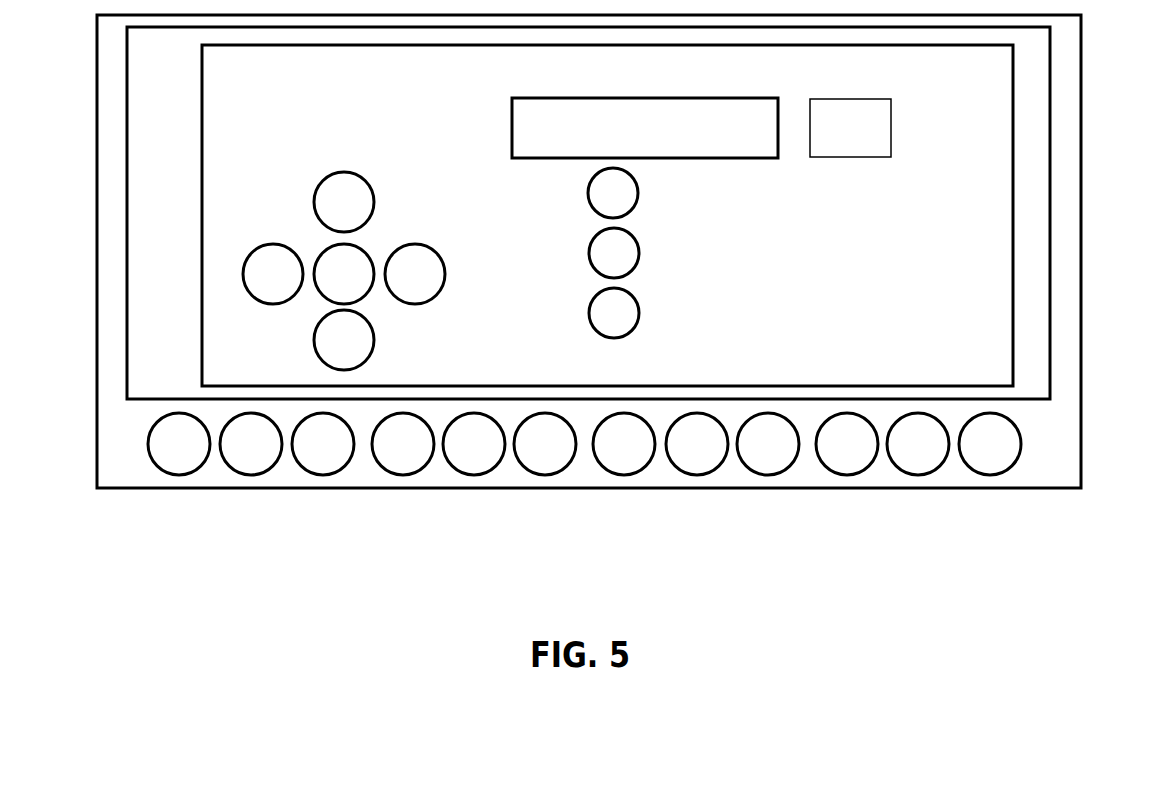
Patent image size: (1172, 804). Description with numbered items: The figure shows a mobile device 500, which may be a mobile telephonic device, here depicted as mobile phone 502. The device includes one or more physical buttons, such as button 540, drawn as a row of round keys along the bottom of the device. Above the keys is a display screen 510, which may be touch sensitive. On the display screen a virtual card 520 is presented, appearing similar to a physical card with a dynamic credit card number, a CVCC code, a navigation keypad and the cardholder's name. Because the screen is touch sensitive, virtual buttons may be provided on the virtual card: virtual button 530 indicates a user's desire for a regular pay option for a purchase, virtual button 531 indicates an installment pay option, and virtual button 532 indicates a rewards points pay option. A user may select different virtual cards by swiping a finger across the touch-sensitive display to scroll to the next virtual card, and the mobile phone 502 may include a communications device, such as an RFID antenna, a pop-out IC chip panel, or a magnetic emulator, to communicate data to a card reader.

The mobile device 500 is at (594, 251).
The mobile phone 502 is at (100, 166).
The display screen 510 is at (130, 77).
The virtual card 520 is at (204, 274).
The virtual button 530 is at (590, 188).
The virtual button 531 is at (590, 248).
The virtual button 532 is at (590, 308).
The button 540 is at (150, 443).